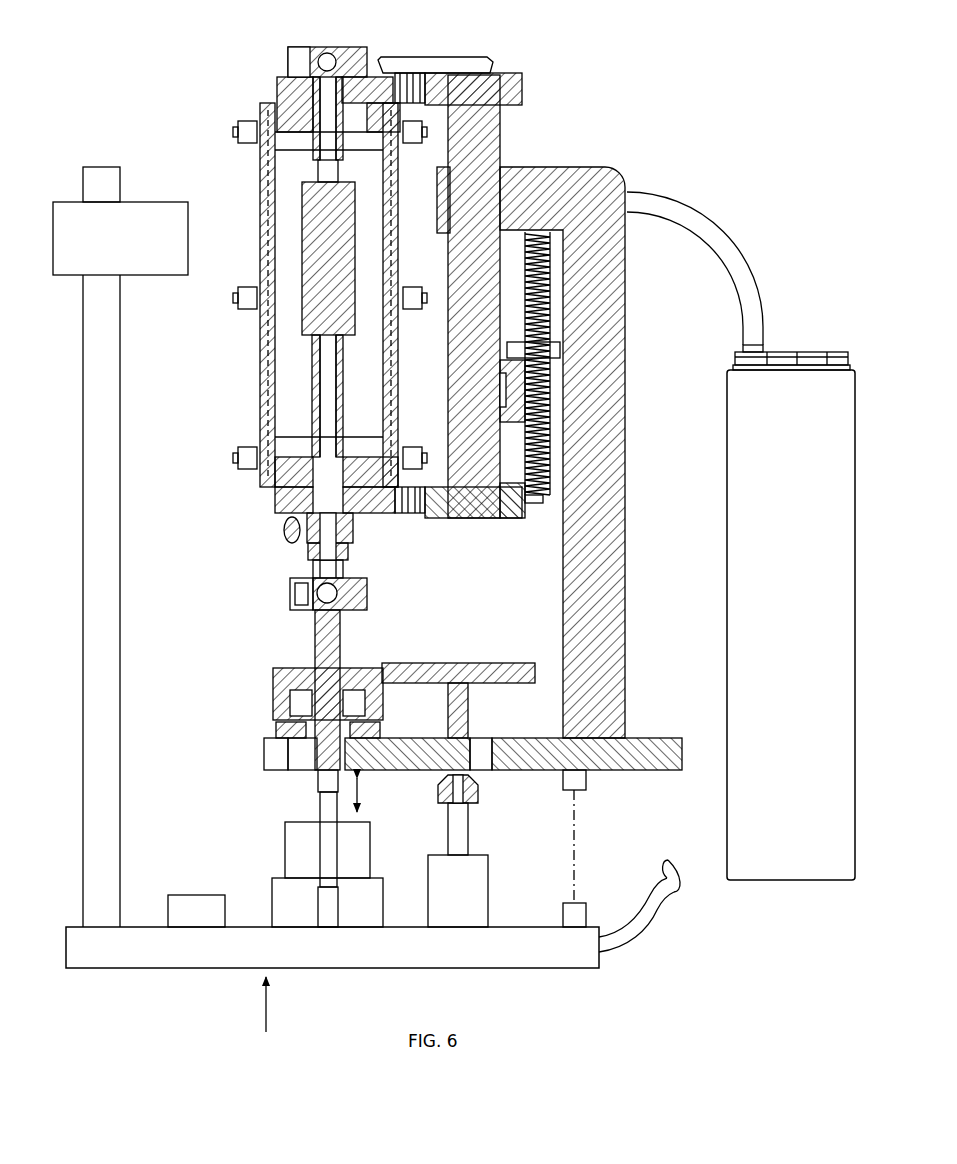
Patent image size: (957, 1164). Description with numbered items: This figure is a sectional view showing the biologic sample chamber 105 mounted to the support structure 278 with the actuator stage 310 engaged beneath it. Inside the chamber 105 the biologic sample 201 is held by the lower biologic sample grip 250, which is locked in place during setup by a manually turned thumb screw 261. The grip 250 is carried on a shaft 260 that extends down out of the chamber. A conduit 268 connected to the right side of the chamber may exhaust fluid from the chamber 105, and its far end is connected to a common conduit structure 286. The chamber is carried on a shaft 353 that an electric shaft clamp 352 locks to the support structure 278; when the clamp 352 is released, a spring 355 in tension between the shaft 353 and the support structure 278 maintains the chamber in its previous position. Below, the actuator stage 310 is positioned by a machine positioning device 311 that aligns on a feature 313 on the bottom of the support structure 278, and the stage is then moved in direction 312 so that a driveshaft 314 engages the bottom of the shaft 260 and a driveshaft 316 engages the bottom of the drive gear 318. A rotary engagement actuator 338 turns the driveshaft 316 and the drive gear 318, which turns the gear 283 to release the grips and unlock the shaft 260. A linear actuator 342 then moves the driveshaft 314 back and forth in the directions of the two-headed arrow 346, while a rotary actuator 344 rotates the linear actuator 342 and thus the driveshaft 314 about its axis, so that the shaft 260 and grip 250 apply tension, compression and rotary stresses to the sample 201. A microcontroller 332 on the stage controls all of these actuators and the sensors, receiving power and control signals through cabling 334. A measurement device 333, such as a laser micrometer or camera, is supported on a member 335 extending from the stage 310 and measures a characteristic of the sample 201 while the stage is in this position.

The chamber 105 is at (262, 163).
The biologic sample 201 is at (302, 220).
The lower biologic sample grip 250 is at (315, 372).
The thumb screw 261 is at (285, 522).
The shaft 260 is at (322, 632).
The gear 283 is at (273, 675).
The drive gear 318 is at (450, 663).
The driveshaft 314 is at (317, 808).
The two-headed arrow 346 is at (362, 792).
The linear actuator 342 is at (285, 824).
The rotary actuator 344 is at (270, 911).
The microcontroller 332 is at (195, 895).
The rotary engagement actuator 338 is at (448, 905).
The driveshaft 316 is at (468, 818).
The feature 313 is at (587, 780).
The machine positioning device 311 is at (587, 913).
The cabling 334 is at (638, 912).
The actuator stage 310 is at (148, 956).
The direction 312 is at (266, 1012).
The measurement device 333 is at (150, 202).
The member 335 is at (100, 167).
The shaft 353 is at (500, 140).
The support structure 278 is at (575, 148).
The spring 355 is at (540, 262).
The electric shaft clamp 352 is at (512, 386).
The conduit 268 is at (695, 220).
The common conduit structure 286 is at (806, 614).